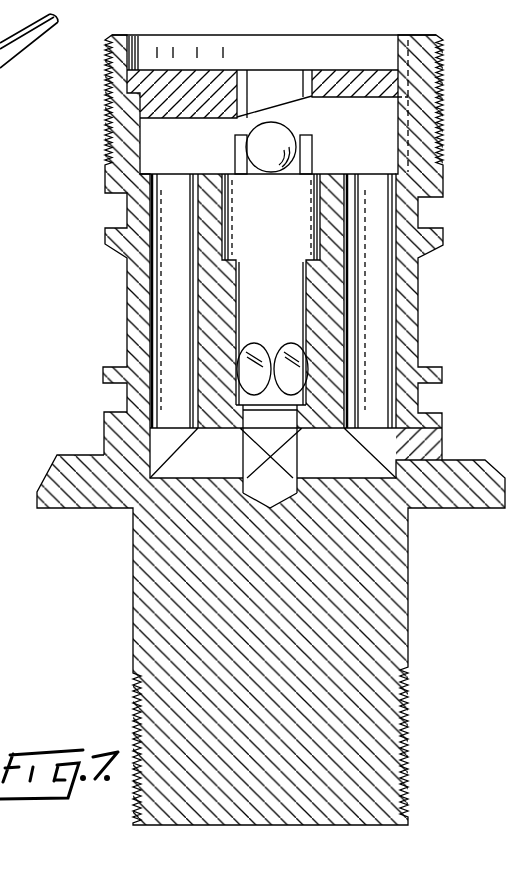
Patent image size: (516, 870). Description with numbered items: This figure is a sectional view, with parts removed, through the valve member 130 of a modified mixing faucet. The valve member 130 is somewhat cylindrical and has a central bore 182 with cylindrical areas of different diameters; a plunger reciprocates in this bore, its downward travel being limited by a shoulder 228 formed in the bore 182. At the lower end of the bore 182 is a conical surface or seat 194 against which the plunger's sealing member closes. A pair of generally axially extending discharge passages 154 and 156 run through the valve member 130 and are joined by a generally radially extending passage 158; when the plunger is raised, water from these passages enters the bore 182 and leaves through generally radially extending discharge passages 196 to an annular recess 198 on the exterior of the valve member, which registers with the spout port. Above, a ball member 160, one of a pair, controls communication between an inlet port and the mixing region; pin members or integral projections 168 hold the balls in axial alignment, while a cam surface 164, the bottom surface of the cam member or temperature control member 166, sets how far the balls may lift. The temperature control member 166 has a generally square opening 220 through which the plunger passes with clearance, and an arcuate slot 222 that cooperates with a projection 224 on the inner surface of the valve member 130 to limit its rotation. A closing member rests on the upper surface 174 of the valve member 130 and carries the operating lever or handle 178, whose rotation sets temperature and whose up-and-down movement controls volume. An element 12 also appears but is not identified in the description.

The fluid conduit 12 is at (9, 409).
The valve member 130 is at (417, 560).
The discharge passage 154 is at (172, 312).
The discharge passage 156 is at (383, 340).
The radially extending passage 158 is at (197, 463).
The ball member 160 is at (297, 135).
The cam surface 164 is at (258, 114).
The cam member or temperature control member 166 is at (203, 67).
The pin members or integral projections 168 is at (235, 165).
The upper surface 174 is at (121, 36).
The operating lever or handle 178 is at (29, 69).
The central bore 182 is at (283, 247).
The conical surface or seat 194 is at (287, 410).
The discharge passages 196 is at (295, 348).
The annular recess 198 is at (418, 282).
The opening 220 is at (278, 82).
The arcuate slot 222 is at (400, 82).
The projection 224 is at (412, 43).
The shoulder 228 is at (317, 250).